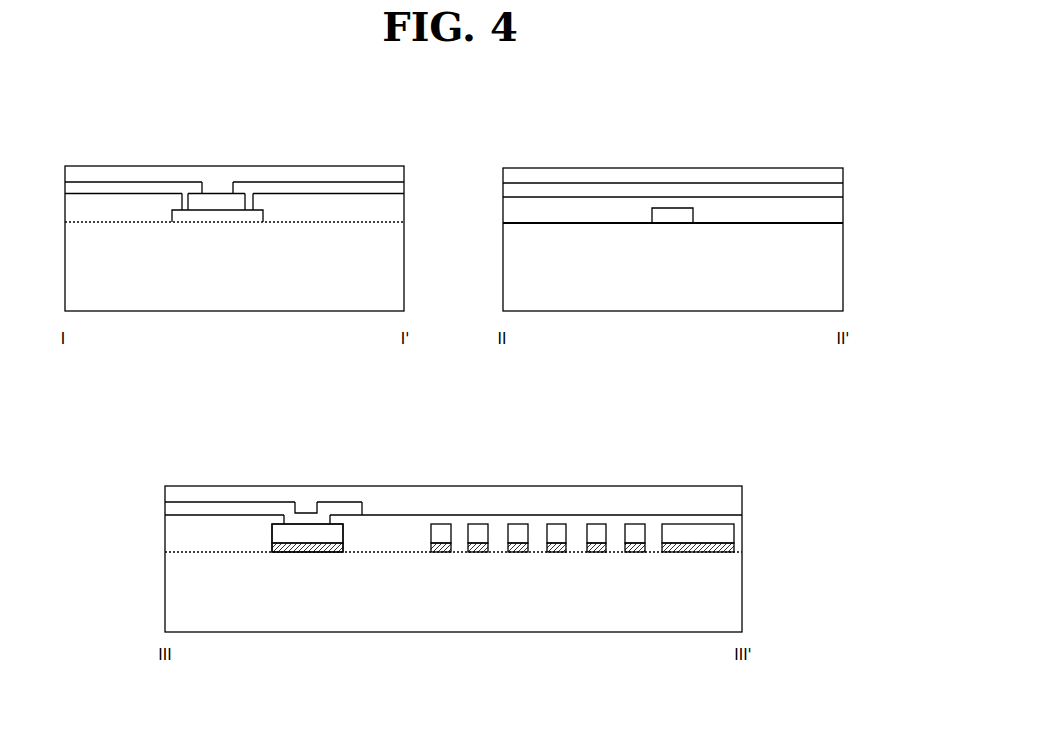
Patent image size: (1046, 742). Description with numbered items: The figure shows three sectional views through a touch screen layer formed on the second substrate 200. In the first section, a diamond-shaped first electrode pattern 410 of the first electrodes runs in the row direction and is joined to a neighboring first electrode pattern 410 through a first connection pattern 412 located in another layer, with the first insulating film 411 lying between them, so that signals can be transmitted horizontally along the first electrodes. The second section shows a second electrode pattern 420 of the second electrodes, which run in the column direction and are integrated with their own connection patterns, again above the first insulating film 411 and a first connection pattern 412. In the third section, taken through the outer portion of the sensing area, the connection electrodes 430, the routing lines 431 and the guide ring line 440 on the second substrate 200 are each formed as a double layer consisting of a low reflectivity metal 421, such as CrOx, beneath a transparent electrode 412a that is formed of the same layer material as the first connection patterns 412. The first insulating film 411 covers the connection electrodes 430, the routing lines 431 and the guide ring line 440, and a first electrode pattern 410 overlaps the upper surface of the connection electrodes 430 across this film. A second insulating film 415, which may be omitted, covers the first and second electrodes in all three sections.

The second substrate 200 is at (395, 260).
The first electrode pattern 410 is at (252, 187).
The first insulating film 411 is at (395, 210).
The first connection pattern 412 is at (220, 213).
The transparent electrode 412a is at (270, 530).
The second insulating film 415 is at (332, 167).
The second electrode pattern 420 is at (616, 190).
The low reflectivity metal 421 is at (270, 547).
The connection electrode 430 is at (113, 525).
The routing line 431 is at (558, 514).
The guide ring line 440 is at (746, 538).